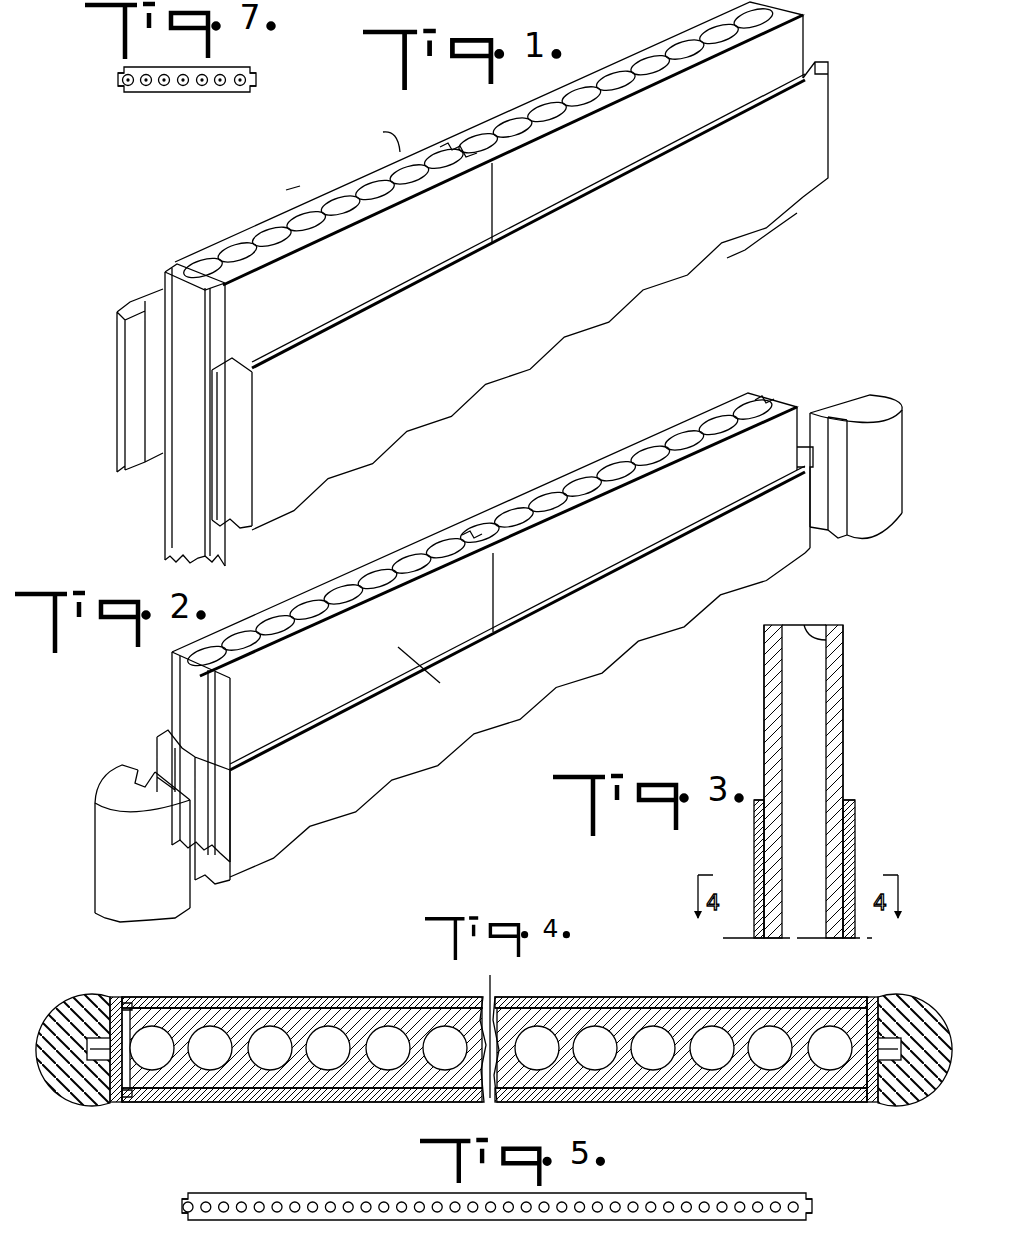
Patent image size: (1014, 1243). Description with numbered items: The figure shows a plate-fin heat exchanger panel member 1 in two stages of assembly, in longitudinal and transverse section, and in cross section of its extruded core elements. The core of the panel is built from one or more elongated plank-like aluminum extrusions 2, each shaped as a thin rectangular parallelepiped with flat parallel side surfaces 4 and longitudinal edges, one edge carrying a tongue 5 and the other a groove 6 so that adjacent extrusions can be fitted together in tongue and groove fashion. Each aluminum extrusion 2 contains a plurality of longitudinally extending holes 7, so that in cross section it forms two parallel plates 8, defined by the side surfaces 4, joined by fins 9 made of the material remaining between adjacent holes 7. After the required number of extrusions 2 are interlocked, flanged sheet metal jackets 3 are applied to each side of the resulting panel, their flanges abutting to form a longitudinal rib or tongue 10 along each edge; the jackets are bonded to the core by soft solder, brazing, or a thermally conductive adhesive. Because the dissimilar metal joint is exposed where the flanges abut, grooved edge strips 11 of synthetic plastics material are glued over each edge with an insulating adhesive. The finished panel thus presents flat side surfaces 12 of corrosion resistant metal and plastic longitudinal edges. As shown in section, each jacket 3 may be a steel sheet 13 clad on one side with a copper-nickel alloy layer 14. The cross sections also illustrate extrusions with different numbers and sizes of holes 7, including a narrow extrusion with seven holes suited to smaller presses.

In FIG. 4, the plate-fin panel member 1 is at (243, 992).
In FIG. 7, the elongated plank-like aluminum extrusion 2 is at (226, 96).
In FIG. 1, the elongated plank-like aluminum extrusion 2 is at (292, 200).
In FIG. 2, the elongated plank-like aluminum extrusion 2 is at (356, 562).
In FIG. 3, the elongated plank-like aluminum extrusion 2 is at (752, 710).
In FIG. 4, the elongated plank-like aluminum extrusion 2 is at (222, 1085).
In FIG. 5, the elongated plank-like aluminum extrusion 2 is at (314, 1190).
In FIG. 1, the sheet metal jacket 3 is at (134, 298).
In FIG. 2, the sheet metal jacket 3 is at (398, 742).
In FIG. 1, the flat parallel side surface 4 is at (363, 199).
In FIG. 2, the flat parallel side surface 4 is at (428, 672).
In FIG. 3, the flat parallel side surface 4 is at (845, 702).
In FIG. 7, the tongue 5 is at (116, 80).
In FIG. 1, the tongue 5 is at (168, 270).
In FIG. 2, the tongue 5 is at (183, 688).
In FIG. 4, the tongue 5 is at (128, 997).
In FIG. 5, the tongue 5 is at (180, 1207).
In FIG. 7, the groove 6 is at (258, 80).
In FIG. 1, the groove 6 is at (455, 148).
In FIG. 2, the groove 6 is at (770, 400).
In FIG. 4, the groove 6 is at (822, 1103).
In FIG. 5, the groove 6 is at (813, 1205).
In FIG. 7, the longitudinally extending hole 7 is at (146, 85).
In FIG. 1, the longitudinally extending hole 7 is at (384, 166).
In FIG. 2, the longitudinally extending hole 7 is at (480, 532).
In FIG. 3, the longitudinally extending hole 7 is at (806, 624).
In FIG. 4, the longitudinally extending hole 7 is at (330, 1028).
In FIG. 5, the longitudinally extending hole 7 is at (224, 1204).
In FIG. 1, the parallel plate 8 is at (337, 194).
In FIG. 3, the parallel plate 8 is at (836, 625).
In FIG. 4, the parallel plate 8 is at (395, 1000).
In FIG. 1, the fin 9 is at (247, 246).
In FIG. 4, the fin 9 is at (570, 1045).
In FIG. 2, the longitudinal rib or tongue 10 is at (148, 775).
In FIG. 4, the longitudinal rib or tongue 10 is at (72, 1092).
In FIG. 2, the grooved edge strip 11 is at (108, 792).
In FIG. 4, the grooved edge strip 11 is at (64, 1010).
In FIG. 4, the flat side surface 12 is at (378, 998).
In FIG. 3, the steel sheet 13 is at (850, 790).
In FIG. 4, the steel sheet 13 is at (500, 1000).
In FIG. 3, the copper-nickel alloy layer 14 is at (856, 808).
In FIG. 4, the copper-nickel alloy layer 14 is at (478, 998).